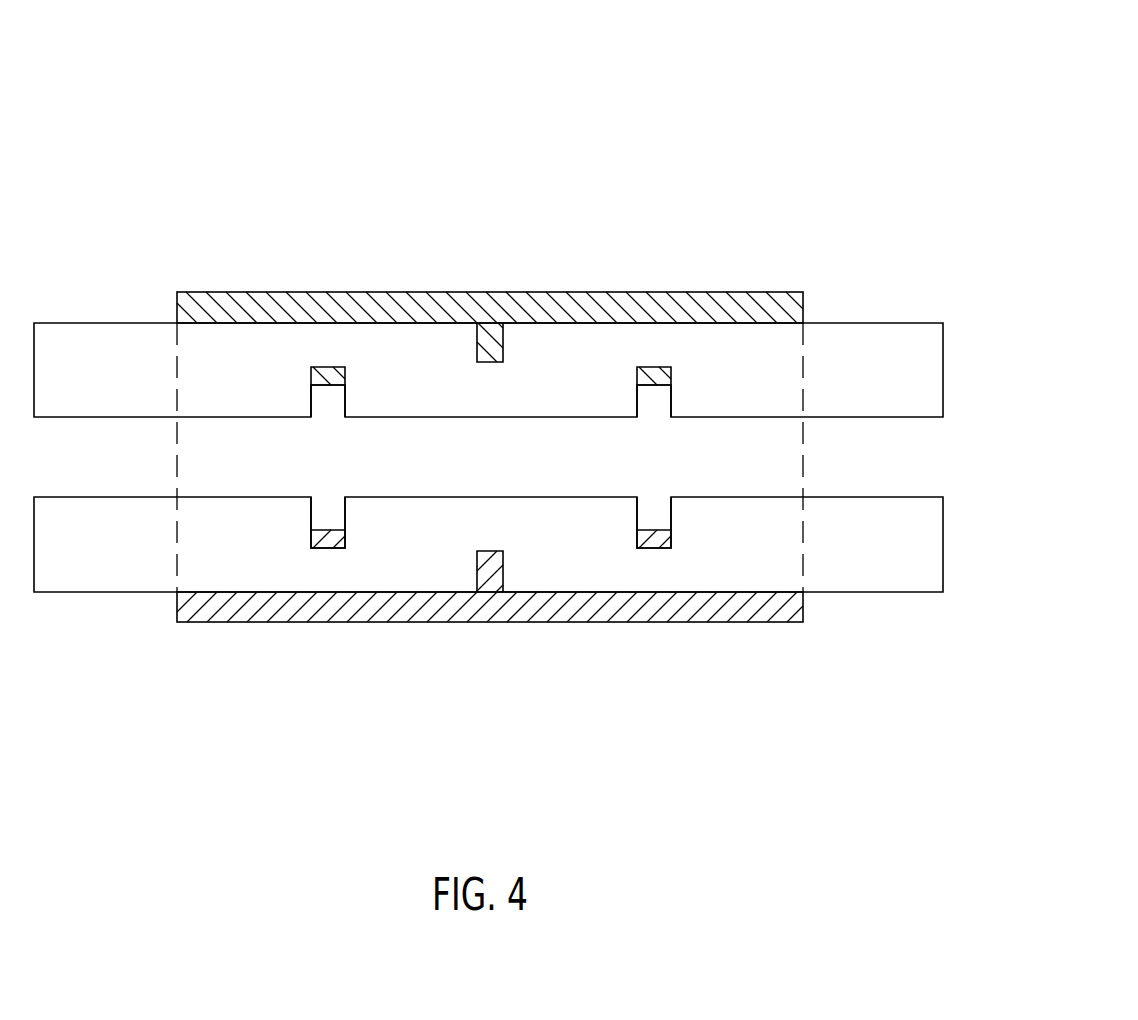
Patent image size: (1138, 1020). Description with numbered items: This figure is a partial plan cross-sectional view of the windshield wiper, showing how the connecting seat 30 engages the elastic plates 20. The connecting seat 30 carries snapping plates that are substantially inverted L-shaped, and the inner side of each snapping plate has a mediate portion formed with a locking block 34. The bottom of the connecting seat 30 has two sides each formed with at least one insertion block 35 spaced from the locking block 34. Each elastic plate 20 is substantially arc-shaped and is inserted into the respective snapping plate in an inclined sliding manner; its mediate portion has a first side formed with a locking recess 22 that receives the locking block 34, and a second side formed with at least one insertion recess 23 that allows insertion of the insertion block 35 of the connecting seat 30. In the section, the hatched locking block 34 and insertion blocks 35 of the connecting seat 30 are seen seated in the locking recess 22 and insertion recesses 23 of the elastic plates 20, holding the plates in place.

The elastic plate 20 is at (947, 375).
The connecting seat 30 is at (617, 290).
The locking block 34 is at (490, 350).
The locking recess 22 is at (477, 568).
The insertion block 35 is at (322, 377).
The insertion recess 23 is at (672, 517).